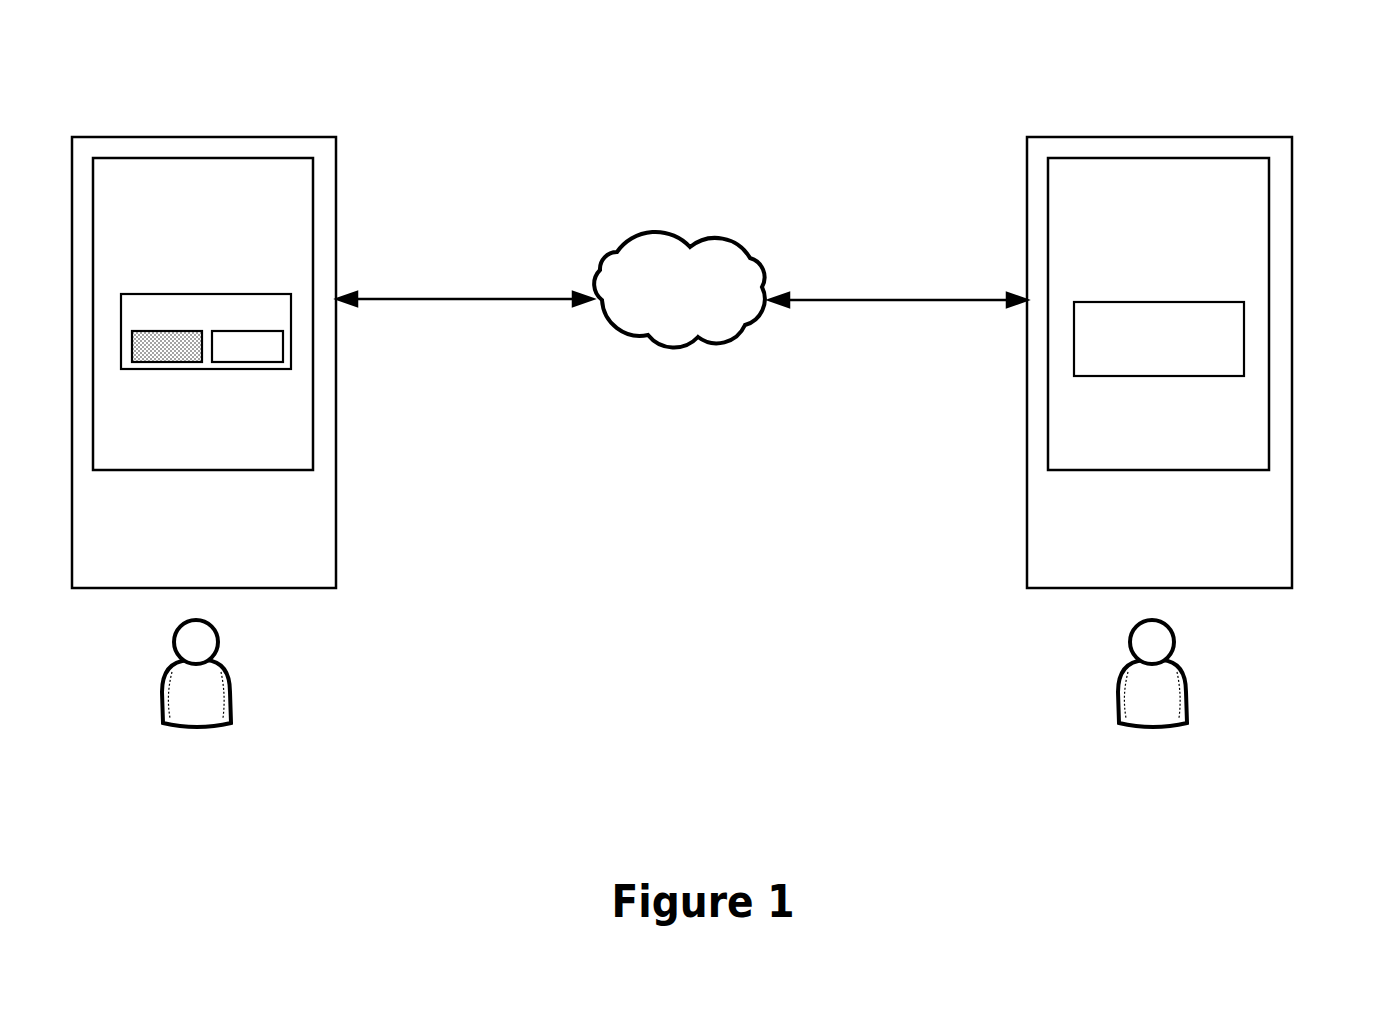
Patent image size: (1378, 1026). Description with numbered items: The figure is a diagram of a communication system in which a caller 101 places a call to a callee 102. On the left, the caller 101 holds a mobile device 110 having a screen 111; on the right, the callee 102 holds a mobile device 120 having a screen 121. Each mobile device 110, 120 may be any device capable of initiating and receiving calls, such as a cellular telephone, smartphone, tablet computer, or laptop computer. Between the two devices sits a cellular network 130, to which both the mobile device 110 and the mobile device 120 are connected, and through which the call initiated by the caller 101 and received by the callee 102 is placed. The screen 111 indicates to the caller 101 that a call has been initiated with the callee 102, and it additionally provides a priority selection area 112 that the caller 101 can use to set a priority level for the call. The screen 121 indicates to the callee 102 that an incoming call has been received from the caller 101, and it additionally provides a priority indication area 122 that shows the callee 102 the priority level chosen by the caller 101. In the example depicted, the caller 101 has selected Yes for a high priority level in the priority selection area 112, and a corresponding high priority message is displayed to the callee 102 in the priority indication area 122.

The caller 101 is at (235, 688).
The callee 102 is at (1190, 687).
The mobile device 110 is at (243, 137).
The screen 111 is at (295, 187).
The priority selection area 112 is at (291, 362).
The mobile device 120 is at (1205, 137).
The screen 121 is at (1250, 188).
The priority indication area 122 is at (1244, 362).
The cellular network 130 is at (683, 235).